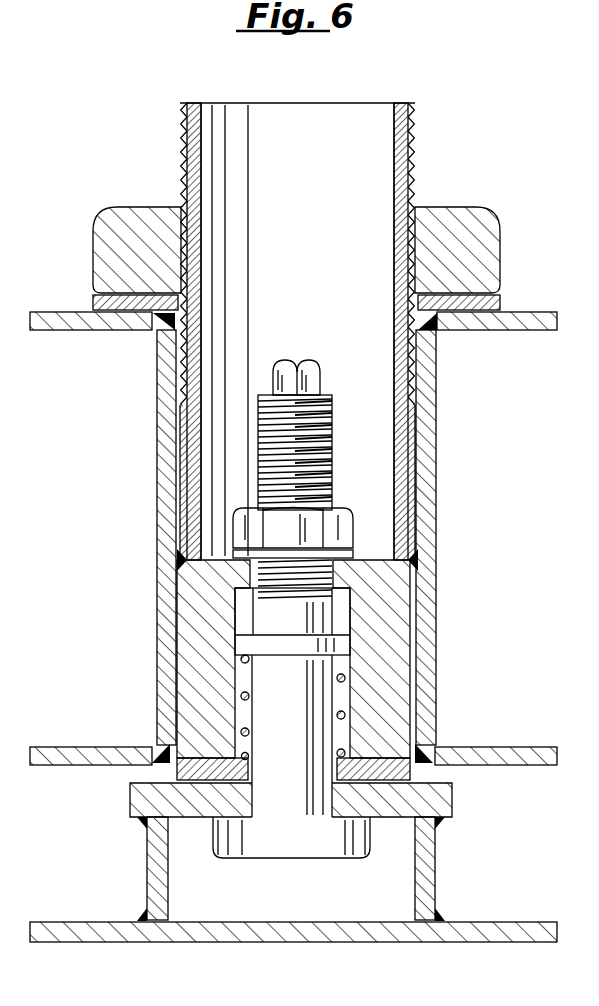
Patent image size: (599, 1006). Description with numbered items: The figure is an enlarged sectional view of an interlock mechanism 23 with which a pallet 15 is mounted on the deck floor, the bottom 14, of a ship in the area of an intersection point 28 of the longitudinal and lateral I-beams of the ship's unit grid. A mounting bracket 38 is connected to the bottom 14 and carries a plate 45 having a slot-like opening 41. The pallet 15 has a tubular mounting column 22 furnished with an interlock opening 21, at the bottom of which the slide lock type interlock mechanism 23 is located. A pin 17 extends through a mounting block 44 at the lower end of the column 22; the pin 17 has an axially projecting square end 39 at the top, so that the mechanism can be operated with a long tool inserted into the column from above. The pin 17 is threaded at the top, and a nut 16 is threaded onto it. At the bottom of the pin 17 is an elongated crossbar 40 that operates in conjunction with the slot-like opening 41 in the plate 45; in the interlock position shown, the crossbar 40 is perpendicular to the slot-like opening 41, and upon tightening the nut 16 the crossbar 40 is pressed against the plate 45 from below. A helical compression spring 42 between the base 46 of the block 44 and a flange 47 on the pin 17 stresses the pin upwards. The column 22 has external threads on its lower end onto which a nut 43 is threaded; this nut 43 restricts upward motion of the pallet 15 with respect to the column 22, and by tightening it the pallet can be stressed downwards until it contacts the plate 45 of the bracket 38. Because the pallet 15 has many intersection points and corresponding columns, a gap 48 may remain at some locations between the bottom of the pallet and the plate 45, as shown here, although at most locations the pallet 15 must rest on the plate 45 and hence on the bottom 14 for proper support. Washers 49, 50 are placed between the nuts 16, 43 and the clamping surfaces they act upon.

The bottom 14 is at (468, 936).
The pallet 15 is at (526, 336).
The nut 16 is at (350, 510).
The pin 17 is at (310, 608).
The interlock opening 21 is at (375, 380).
The tubular mounting column 22 is at (410, 133).
The interlock mechanism 23 is at (290, 870).
The intersection point 28 is at (150, 742).
The mounting bracket 38 is at (428, 862).
The square end 39 is at (310, 372).
The crossbar 40 is at (331, 847).
The slot-like opening 41 is at (247, 812).
The helical compression spring 42 is at (345, 680).
The nut 43 is at (483, 243).
The mounting block 44 is at (192, 583).
The plate 45 is at (425, 801).
The base 46 is at (195, 775).
The flange 47 is at (250, 640).
The gap 48 is at (158, 773).
The washer 49 is at (358, 553).
The washer 50 is at (97, 300).